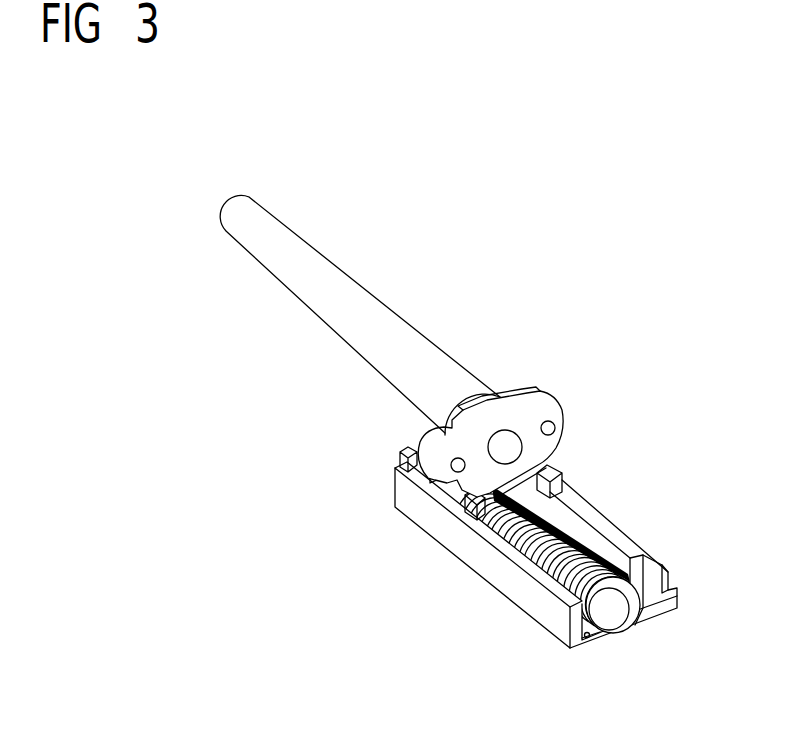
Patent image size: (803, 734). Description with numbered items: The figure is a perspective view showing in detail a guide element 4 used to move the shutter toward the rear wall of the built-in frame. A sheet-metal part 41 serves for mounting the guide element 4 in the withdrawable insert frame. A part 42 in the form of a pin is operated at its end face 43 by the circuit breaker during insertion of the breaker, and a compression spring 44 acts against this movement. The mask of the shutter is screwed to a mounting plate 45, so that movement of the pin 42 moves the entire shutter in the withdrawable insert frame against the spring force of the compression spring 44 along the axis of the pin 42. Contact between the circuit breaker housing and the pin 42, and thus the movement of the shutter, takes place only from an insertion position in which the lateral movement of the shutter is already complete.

The guide element 4 is at (424, 252).
The sheet-metal part 41 is at (654, 578).
The pin 42 is at (445, 367).
The end face 43 is at (216, 195).
The compression spring 44 is at (562, 520).
The mounting plate 45 is at (538, 375).